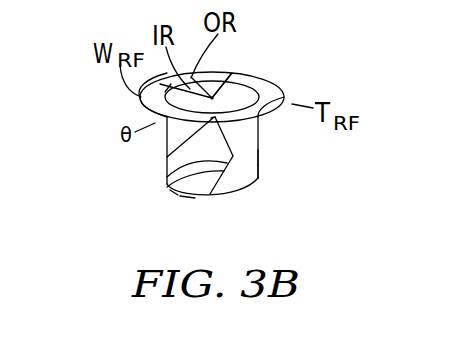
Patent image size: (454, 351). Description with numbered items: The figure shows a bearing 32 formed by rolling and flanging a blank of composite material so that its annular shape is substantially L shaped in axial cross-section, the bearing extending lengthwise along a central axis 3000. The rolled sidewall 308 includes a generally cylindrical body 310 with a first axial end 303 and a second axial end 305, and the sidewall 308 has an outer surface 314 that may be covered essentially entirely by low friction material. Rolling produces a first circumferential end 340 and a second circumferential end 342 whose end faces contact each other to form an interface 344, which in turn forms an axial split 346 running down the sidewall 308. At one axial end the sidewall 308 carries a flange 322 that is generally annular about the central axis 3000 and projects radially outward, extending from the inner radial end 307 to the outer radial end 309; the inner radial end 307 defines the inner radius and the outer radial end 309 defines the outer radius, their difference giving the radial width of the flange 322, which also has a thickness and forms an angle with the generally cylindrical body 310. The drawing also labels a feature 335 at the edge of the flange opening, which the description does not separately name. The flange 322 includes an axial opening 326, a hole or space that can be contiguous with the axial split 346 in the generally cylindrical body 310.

The bearing 32 is at (375, 32).
The central axis 3000 is at (232, 75).
The inner opening edge of flange 335 is at (248, 85).
The second axial end 305 is at (287, 98).
The outer radial end 309 is at (140, 97).
The flange 322 is at (143, 103).
The axial opening 326 is at (167, 157).
The inner radial end 307 is at (259, 138).
The outer surface 314 is at (283, 114).
The sidewall 308 is at (260, 160).
The generally cylindrical body 310 is at (260, 172).
The interface 344 is at (168, 182).
The axial split 346 is at (178, 195).
The first axial end 303 is at (186, 200).
The first circumferential end 340 is at (210, 195).
The second circumferential end 342 is at (214, 195).